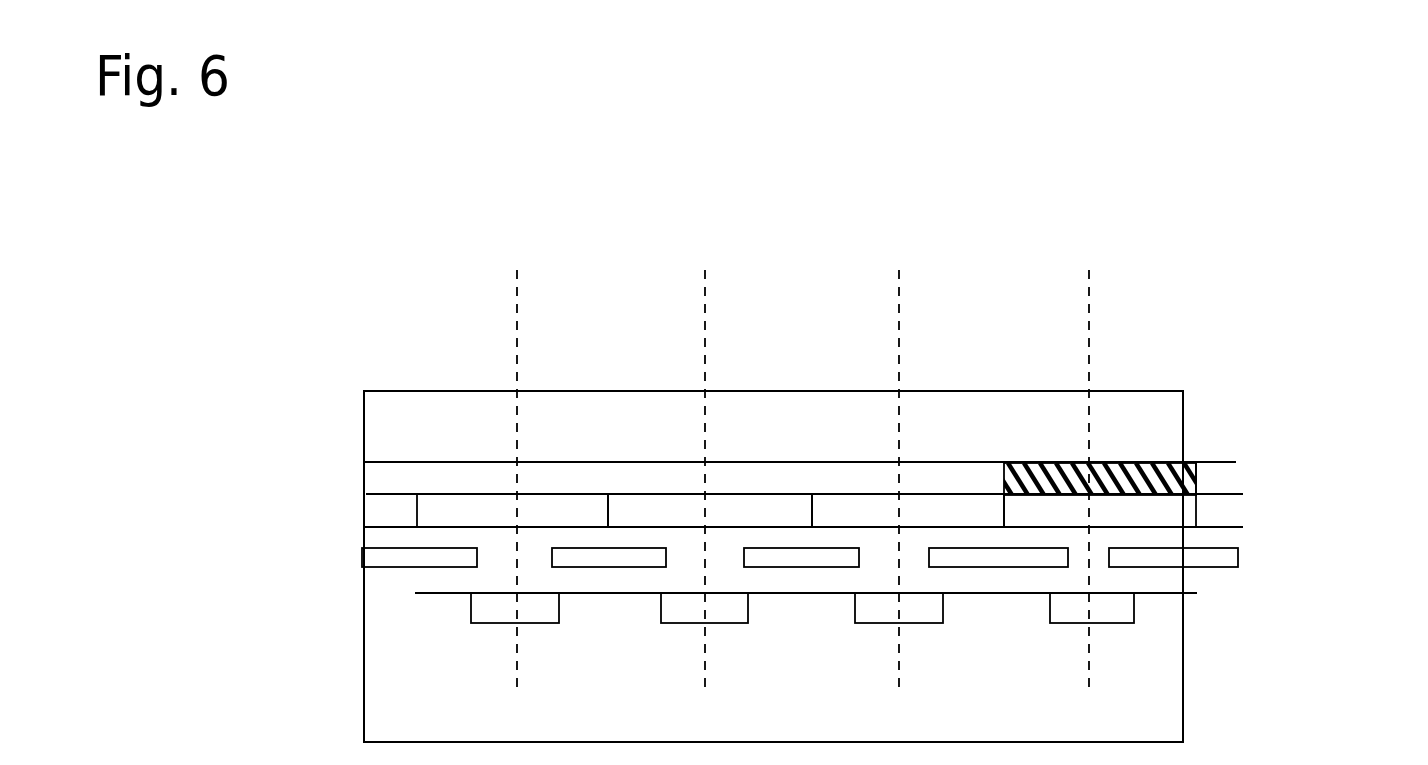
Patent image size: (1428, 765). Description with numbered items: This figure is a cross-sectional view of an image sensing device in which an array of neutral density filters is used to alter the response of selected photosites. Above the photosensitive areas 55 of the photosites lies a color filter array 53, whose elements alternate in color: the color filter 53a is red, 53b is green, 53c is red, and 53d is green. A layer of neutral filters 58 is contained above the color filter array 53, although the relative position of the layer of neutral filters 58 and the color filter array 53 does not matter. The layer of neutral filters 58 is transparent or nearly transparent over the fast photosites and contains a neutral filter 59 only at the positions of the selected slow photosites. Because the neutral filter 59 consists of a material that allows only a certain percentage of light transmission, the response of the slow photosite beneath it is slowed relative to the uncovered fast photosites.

The color filter array 53 is at (1238, 503).
The red color filter 53a is at (475, 498).
The green color filter 53b is at (735, 498).
The red color filter 53c is at (920, 497).
The green color filter 53d is at (1138, 514).
The photosensitive area 55 is at (1132, 617).
The layer of neutral filters 58 is at (928, 462).
The neutral filter 59 is at (1160, 460).